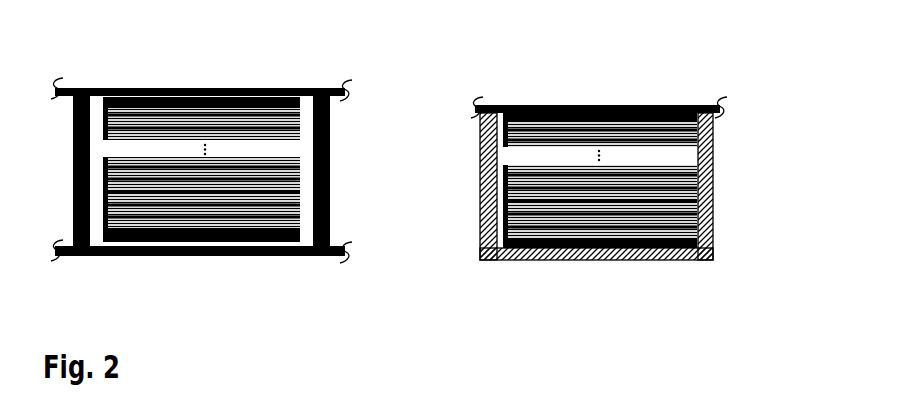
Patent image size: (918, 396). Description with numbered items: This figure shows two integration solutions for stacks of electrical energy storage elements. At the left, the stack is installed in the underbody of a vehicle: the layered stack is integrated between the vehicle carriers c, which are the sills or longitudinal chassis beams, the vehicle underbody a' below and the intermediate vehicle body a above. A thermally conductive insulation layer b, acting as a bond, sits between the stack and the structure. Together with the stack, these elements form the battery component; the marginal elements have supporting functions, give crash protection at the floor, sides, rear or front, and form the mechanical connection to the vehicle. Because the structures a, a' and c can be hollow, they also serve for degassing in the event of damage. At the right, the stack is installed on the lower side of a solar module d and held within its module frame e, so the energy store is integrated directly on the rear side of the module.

The intermediate vehicle body a is at (245, 74).
The vehicle underbody a' is at (247, 248).
The thermally conductive insulation layer b is at (300, 240).
The vehicle carrier c is at (330, 164).
The solar module d is at (722, 110).
The module frame e is at (713, 190).